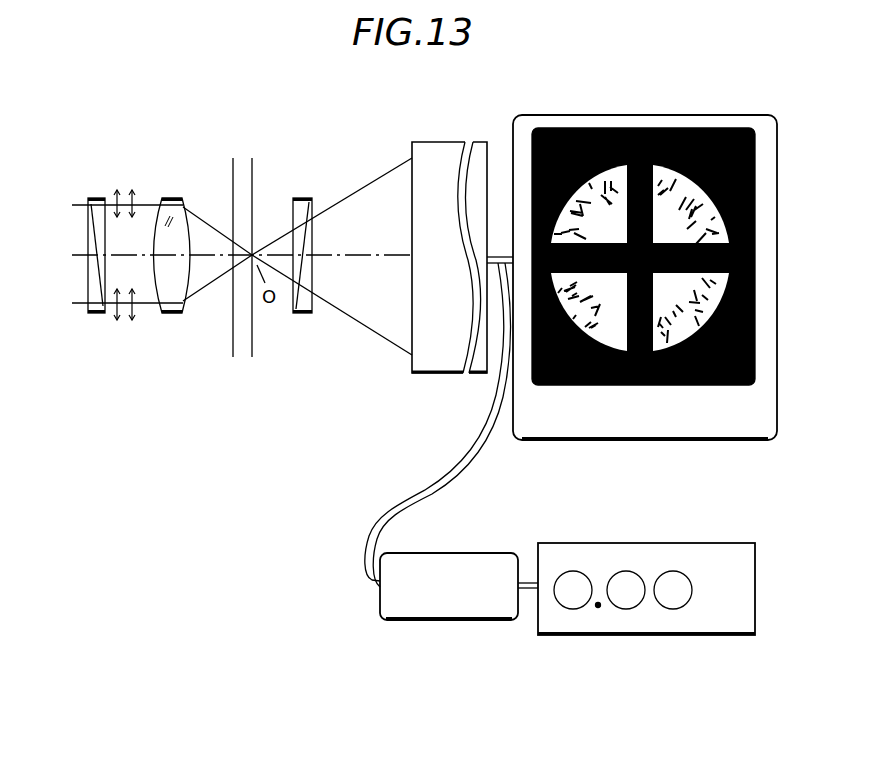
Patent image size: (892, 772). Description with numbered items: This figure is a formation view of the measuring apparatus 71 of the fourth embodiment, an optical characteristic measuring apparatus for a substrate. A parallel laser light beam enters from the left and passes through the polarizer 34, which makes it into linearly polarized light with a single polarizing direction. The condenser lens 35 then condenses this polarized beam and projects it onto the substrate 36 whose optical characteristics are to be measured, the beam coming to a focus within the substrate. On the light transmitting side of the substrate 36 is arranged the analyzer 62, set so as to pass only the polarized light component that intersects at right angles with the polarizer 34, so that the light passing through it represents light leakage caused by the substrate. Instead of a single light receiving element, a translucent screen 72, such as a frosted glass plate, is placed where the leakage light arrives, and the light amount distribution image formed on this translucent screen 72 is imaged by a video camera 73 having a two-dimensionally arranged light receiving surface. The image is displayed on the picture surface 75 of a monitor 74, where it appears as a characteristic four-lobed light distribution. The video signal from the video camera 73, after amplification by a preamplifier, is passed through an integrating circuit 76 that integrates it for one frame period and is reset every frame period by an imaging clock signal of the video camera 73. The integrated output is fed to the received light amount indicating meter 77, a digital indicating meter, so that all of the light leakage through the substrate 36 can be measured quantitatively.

The polarizer 34 is at (100, 198).
The condenser lens 35 is at (170, 198).
The substrate 36 is at (245, 327).
The analyzer 62 is at (303, 198).
The measuring apparatus 71 is at (242, 156).
The translucent screen 72 is at (412, 144).
The video camera 73 is at (452, 142).
The monitor 74 is at (552, 115).
The picture surface 75 is at (727, 128).
The integrating circuit 76 is at (460, 553).
The received light amount indicating meter 77 is at (647, 543).